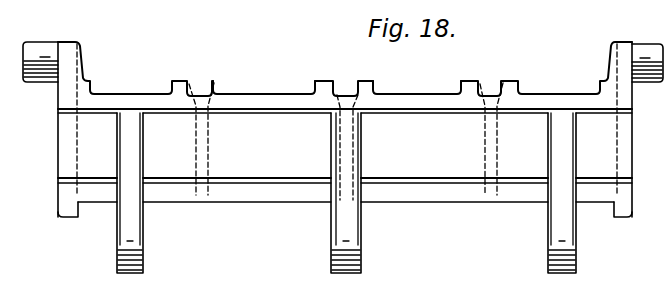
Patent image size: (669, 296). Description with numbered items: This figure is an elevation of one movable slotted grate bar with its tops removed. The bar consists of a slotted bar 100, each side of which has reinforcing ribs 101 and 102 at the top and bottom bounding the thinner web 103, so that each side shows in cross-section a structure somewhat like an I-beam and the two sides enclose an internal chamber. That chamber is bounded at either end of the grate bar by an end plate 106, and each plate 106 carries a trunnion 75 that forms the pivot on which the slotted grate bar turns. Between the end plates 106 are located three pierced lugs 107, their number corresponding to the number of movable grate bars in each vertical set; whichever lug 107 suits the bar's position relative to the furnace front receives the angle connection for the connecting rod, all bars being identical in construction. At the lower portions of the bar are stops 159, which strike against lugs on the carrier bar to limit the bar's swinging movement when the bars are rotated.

The trunnion 75 is at (41, 40).
The slotted bar 100 is at (266, 79).
The reinforcing rib 101 is at (406, 102).
The reinforcing rib 102 is at (413, 190).
The web 103 is at (345, 162).
The end plate 106 is at (58, 106).
The lug 107 is at (145, 218).
The stop 159 is at (65, 216).